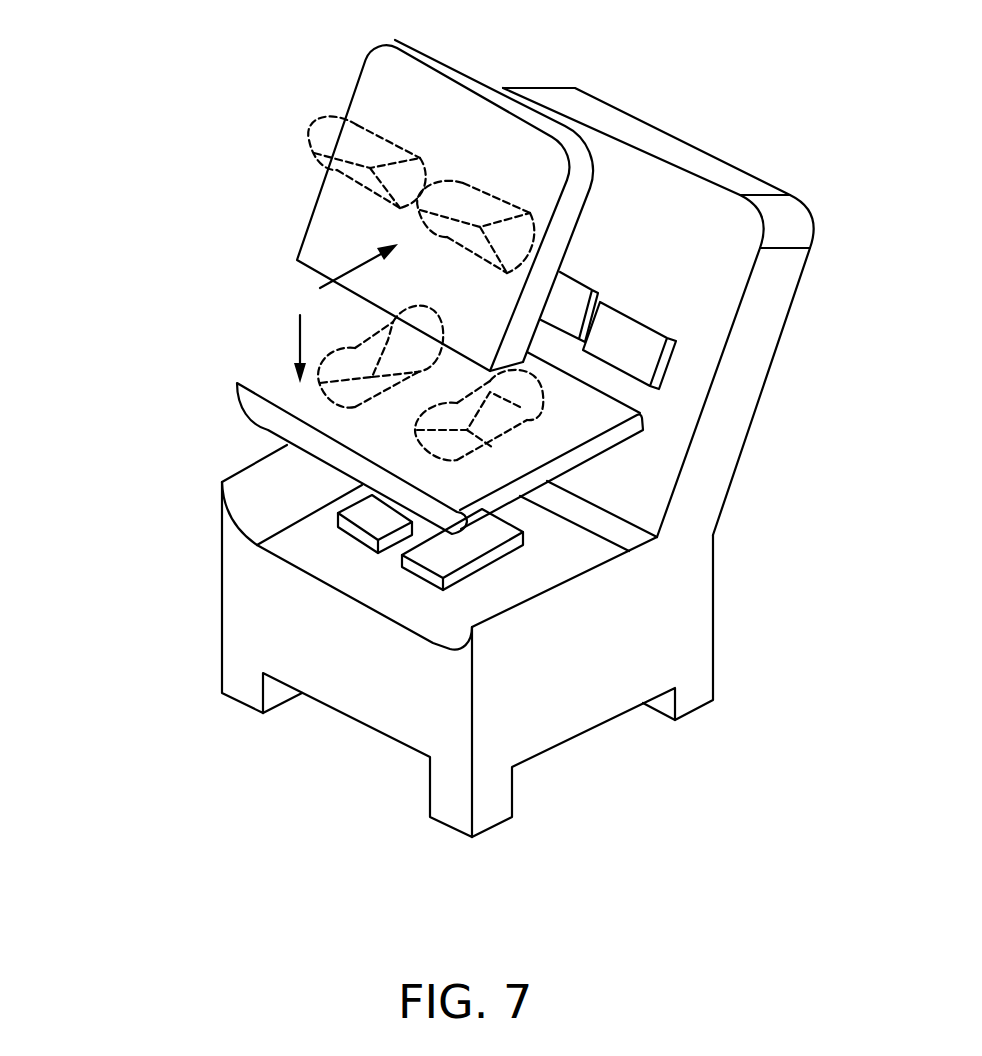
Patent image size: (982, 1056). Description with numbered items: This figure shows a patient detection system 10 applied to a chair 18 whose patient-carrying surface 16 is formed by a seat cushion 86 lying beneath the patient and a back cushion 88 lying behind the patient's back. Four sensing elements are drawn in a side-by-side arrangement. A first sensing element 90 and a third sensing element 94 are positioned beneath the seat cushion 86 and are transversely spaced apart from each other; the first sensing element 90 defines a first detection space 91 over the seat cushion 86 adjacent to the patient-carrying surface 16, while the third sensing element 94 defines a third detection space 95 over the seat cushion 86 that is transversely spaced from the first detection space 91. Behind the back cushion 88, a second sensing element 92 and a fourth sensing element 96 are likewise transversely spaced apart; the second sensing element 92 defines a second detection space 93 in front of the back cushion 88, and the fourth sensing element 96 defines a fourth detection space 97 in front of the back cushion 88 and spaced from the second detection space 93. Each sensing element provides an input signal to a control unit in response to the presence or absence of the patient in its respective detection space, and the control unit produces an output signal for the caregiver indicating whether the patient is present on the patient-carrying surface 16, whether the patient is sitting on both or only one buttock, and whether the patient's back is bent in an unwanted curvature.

The patient detection system 10 is at (714, 205).
The patient-carrying surface 16 is at (342, 313).
The chair 18 is at (162, 658).
The seat cushion 86 is at (562, 440).
The back cushion 88 is at (441, 93).
The first sensing element 90 is at (455, 546).
The first detection space 91 is at (494, 448).
The second sensing element 92 is at (638, 334).
The second detection space 93 is at (482, 188).
The third sensing element 94 is at (372, 523).
The third detection space 95 is at (488, 378).
The fourth sensing element 96 is at (562, 291).
The fourth detection space 97 is at (312, 128).